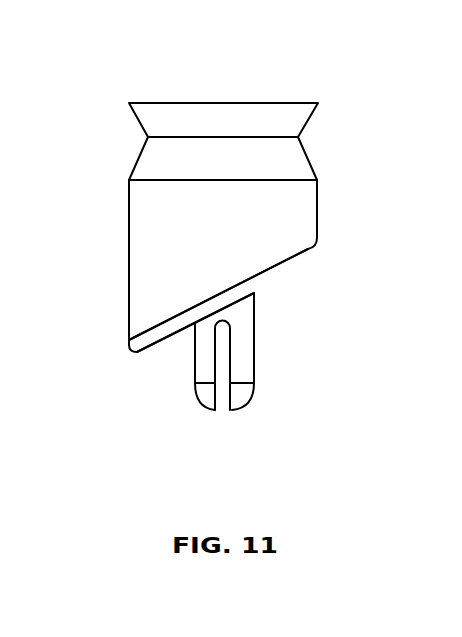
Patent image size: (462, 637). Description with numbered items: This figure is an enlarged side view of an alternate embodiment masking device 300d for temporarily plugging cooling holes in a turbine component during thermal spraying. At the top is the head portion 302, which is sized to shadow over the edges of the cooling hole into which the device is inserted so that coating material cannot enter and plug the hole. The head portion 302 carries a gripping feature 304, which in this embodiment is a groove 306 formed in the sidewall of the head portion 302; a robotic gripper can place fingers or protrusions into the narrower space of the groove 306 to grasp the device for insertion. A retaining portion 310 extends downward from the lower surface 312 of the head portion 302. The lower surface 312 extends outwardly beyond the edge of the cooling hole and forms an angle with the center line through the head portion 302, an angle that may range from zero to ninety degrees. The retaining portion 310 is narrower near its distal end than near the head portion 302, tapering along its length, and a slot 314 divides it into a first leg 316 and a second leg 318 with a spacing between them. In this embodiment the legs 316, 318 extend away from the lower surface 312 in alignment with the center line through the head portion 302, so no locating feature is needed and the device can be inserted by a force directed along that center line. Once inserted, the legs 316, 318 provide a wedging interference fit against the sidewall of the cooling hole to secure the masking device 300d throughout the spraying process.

The masking device 300d is at (238, 253).
The head portion 302 is at (328, 248).
The gripping feature 304 is at (113, 180).
The groove 306 is at (313, 137).
The retaining portion 310 is at (233, 382).
The lower surface 312 is at (302, 256).
The slot 314 is at (222, 377).
The first leg 316 is at (250, 358).
The second leg 318 is at (193, 358).